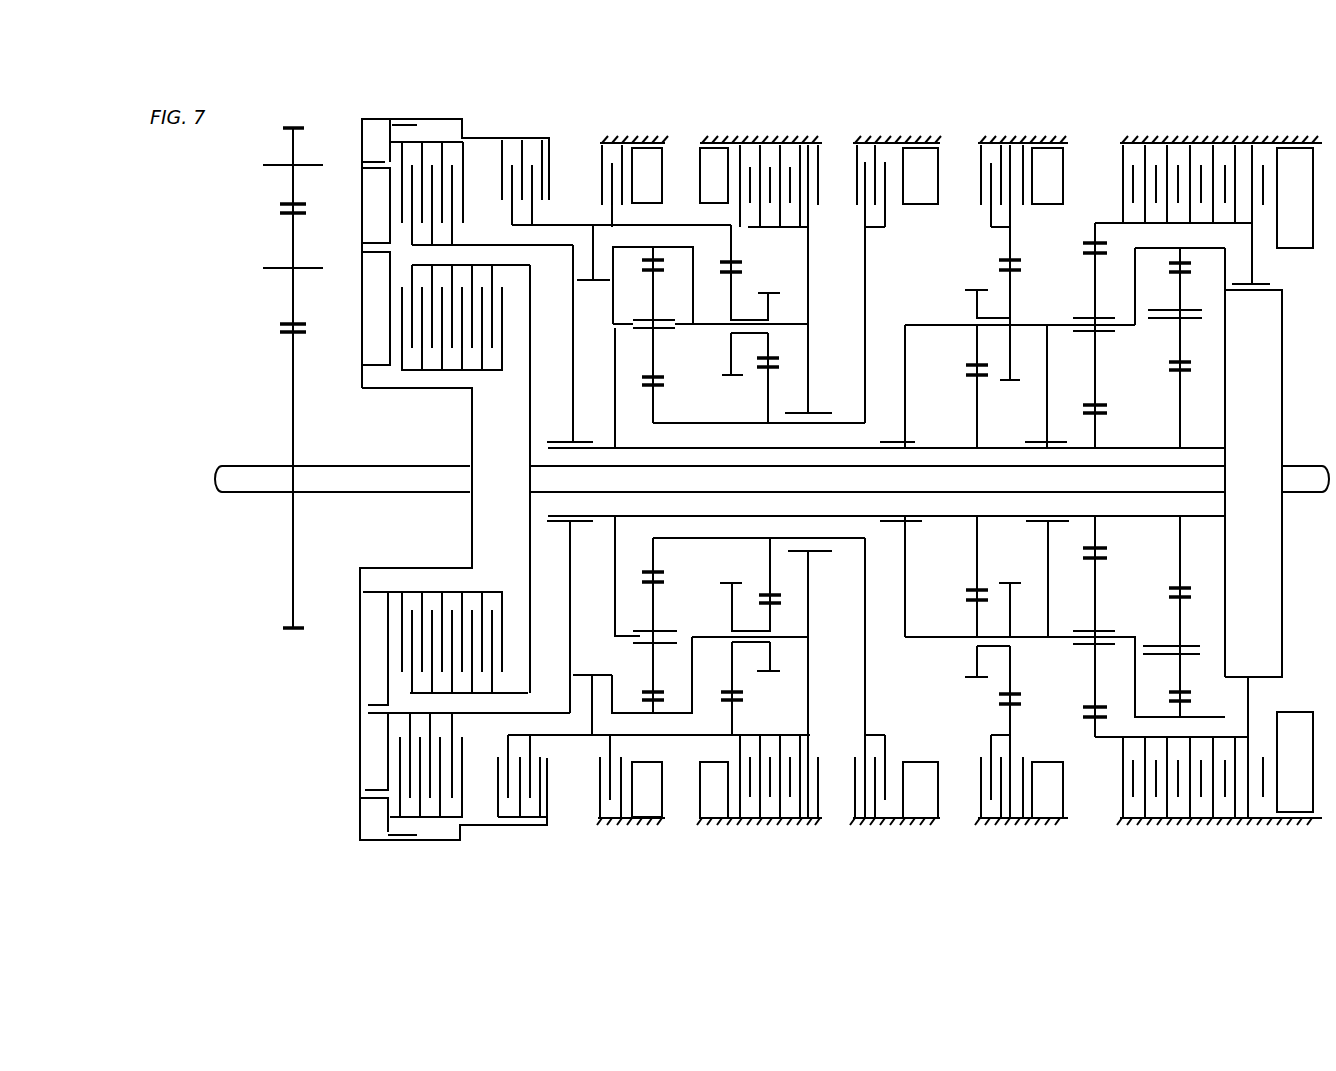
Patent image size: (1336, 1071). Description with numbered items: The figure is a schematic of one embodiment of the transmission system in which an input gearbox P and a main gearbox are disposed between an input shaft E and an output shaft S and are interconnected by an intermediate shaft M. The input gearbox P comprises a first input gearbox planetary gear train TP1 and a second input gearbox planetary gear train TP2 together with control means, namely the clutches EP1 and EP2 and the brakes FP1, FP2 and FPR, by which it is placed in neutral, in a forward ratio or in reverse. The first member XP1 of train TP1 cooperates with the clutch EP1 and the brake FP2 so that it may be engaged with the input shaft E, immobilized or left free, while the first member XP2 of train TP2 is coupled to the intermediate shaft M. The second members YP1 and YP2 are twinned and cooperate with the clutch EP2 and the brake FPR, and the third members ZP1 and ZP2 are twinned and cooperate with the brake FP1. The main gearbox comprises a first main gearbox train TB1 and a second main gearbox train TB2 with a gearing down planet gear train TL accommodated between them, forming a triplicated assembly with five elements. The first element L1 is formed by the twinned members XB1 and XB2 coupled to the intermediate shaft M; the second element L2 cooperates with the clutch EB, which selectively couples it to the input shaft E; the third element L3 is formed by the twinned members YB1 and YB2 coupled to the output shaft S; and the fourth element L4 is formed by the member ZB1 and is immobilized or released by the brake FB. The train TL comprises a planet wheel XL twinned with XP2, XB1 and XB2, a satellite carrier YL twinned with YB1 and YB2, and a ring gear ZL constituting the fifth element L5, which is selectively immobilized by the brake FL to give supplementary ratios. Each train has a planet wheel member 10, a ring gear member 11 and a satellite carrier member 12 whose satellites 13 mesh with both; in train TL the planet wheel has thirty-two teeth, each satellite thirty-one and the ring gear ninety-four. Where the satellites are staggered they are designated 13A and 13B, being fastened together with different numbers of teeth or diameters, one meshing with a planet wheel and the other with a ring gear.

The input shaft E is at (234, 469).
The output shaft S is at (1299, 463).
The clutch EB is at (382, 340).
The clutch EP2 is at (465, 143).
The clutch EP1 is at (532, 143).
The brake FP2 is at (647, 143).
The brake FPR is at (790, 143).
The brake FP1 is at (905, 143).
The brake FB is at (1027, 143).
The brake FL is at (1252, 143).
The intermediate shaft M is at (939, 446).
The first member of the second input gearbox train XP2 is at (616, 338).
The second member of the second input gearbox train YP2 is at (650, 250).
The first member of the first input gearbox train XP1 is at (733, 234).
The second member of the first input gearbox train YP1 is at (792, 320).
The third member of the first input gearbox train ZP1 is at (769, 402).
The third member of the second input gearbox train ZP2 is at (658, 406).
The second member of the first main gearbox train YB1 is at (914, 323).
The third member of the first main gearbox train ZB1 is at (1005, 256).
The fourth element L4 is at (1006, 238).
The third element L3 is at (1030, 325).
The satellite carrier YL is at (1062, 323).
The first member of the first main gearbox train XB1 is at (977, 429).
The planet wheel XL is at (1090, 426).
The ring gear ZL is at (1082, 245).
The fifth element L5 is at (1093, 232).
The third member of the second main gearbox train YB2 is at (1179, 258).
The first member of the second main gearbox train XB2 is at (1182, 428).
The first element L1 is at (1132, 447).
The second element L2 is at (1229, 341).
The second input gearbox planetary gear train TP2 is at (642, 643).
The first input gearbox planetary gear train TP1 is at (777, 644).
The planet wheel member 10 is at (656, 548).
The staggered satellite 13A is at (776, 618).
The staggered satellite 13B is at (732, 618).
The satellite 13 is at (672, 610).
The satellite carrier member 12 is at (626, 632).
The ring gear member 11 is at (663, 702).
The gearing down planet gear train TL is at (1098, 561).
The first main gearbox planetary gear train TB1 is at (966, 681).
The second main gearbox planetary gear train TB2 is at (1190, 608).
The input gearbox P is at (748, 823).